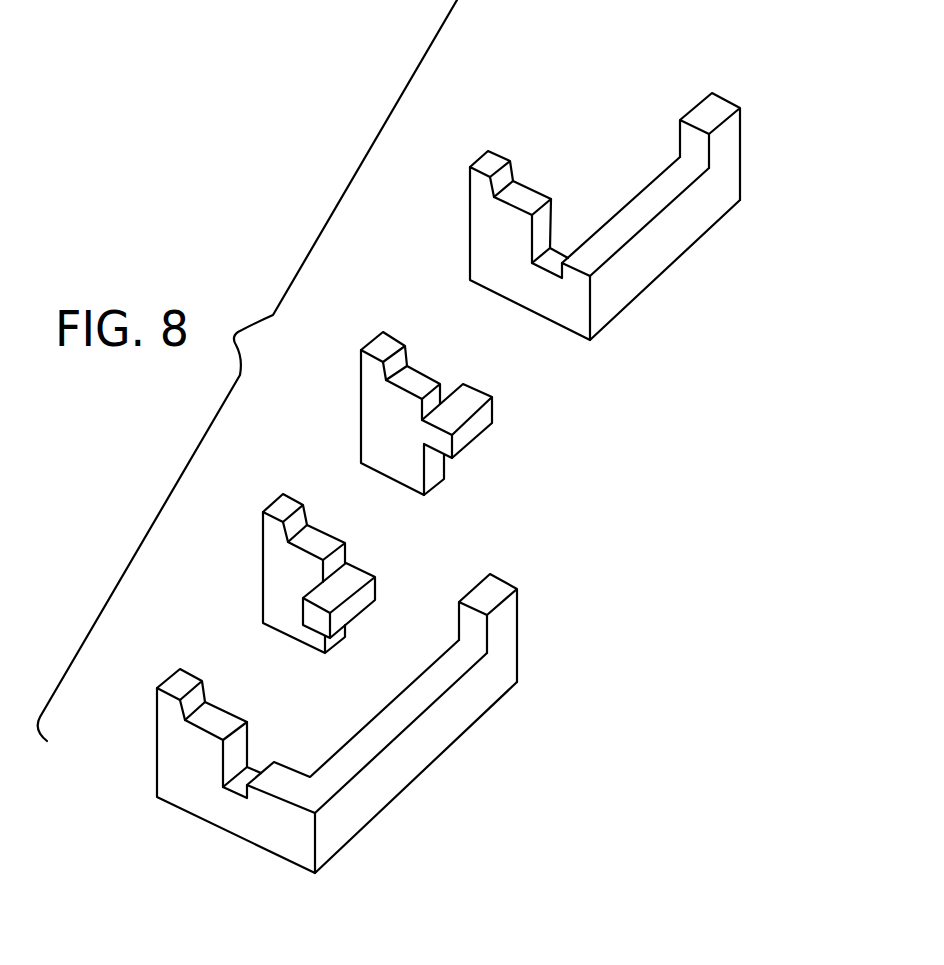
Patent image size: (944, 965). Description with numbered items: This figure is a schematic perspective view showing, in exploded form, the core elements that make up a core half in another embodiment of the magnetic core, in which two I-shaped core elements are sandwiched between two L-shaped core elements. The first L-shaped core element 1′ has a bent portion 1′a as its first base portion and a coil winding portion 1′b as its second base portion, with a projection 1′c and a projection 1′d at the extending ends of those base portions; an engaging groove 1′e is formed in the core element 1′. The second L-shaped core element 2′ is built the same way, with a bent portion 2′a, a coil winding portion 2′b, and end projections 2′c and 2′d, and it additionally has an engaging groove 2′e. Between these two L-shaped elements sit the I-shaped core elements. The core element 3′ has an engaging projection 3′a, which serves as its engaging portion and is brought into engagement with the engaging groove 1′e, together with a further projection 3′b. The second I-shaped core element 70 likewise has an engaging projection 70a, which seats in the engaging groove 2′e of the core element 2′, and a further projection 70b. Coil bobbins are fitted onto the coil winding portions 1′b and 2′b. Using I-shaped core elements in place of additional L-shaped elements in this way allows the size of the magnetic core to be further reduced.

The core element 1′ is at (722, 187).
The bent portion 1′a is at (486, 243).
The coil winding portion 1′b is at (652, 250).
The projection 1′c is at (482, 181).
The projection 1′d is at (730, 130).
The engaging groove 1′e is at (548, 266).
The core element 2′ is at (457, 717).
The bent portion 2′a is at (197, 802).
The coil winding portion 2′b is at (360, 812).
The projection 2′c is at (166, 704).
The projection 2′d is at (503, 618).
The engaging groove 2′e is at (246, 782).
The core element 3′ is at (378, 425).
The engaging projection 3′a is at (468, 405).
The projection 3′b is at (372, 367).
The second I-shaped core element 70 is at (273, 587).
The engaging projection 70a is at (350, 577).
The projection 70b is at (273, 527).